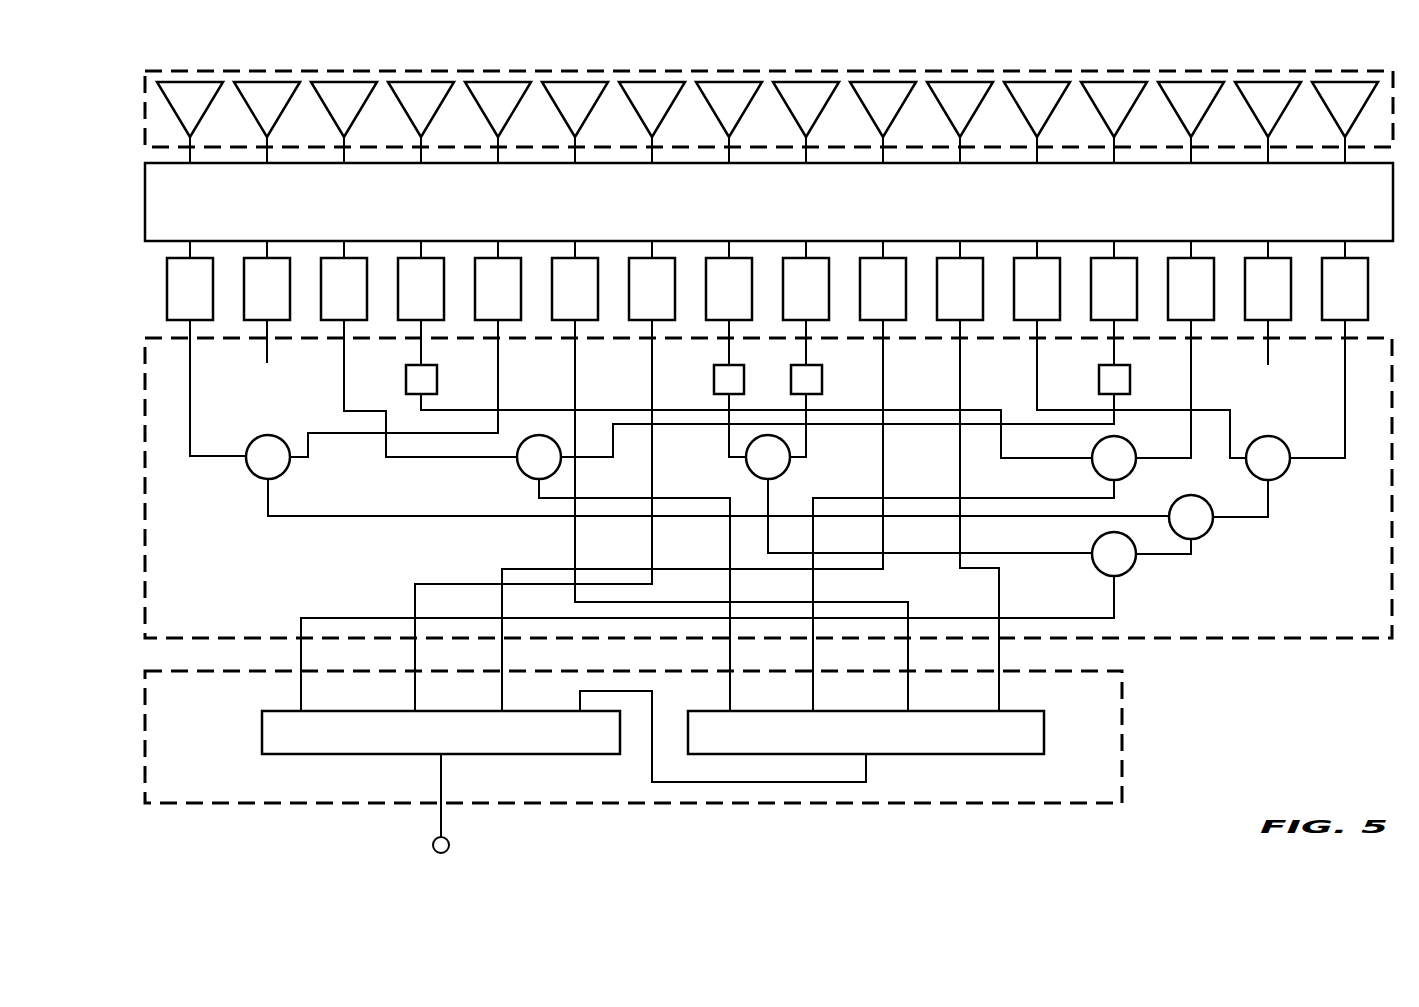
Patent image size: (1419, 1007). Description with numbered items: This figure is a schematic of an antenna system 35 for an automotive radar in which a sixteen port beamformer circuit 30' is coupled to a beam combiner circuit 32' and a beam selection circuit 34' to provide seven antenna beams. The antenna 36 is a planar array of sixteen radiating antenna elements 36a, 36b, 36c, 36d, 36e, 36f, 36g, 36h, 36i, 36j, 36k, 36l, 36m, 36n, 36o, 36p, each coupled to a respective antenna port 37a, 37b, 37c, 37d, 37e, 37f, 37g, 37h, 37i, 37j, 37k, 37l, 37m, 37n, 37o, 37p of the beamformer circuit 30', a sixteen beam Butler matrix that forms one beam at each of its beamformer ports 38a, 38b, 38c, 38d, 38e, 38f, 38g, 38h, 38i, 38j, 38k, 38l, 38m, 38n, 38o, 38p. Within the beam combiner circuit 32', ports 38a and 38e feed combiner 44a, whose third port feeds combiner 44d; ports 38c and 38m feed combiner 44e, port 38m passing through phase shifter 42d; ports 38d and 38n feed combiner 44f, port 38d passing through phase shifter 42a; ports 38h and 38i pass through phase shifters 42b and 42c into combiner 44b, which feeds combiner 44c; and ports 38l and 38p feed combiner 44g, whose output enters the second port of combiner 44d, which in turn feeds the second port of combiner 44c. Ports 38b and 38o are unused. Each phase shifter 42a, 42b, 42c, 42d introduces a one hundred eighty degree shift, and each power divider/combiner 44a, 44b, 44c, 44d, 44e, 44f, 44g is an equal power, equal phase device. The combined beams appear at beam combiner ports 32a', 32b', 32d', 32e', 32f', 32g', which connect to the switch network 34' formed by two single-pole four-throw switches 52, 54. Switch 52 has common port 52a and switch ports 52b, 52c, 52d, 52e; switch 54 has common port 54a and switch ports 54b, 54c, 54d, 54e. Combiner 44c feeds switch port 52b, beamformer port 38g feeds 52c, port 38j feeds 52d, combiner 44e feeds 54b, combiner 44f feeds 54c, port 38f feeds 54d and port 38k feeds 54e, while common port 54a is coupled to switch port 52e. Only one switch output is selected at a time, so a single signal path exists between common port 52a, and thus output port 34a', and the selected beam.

The antenna system 35 is at (1354, 70).
The antenna 36 is at (166, 122).
The antenna element 36a is at (174, 107).
The antenna element 36b is at (251, 107).
The antenna element 36c is at (328, 107).
The antenna element 36d is at (405, 107).
The antenna element 36e is at (482, 107).
The antenna element 36f is at (559, 107).
The antenna element 36g is at (636, 107).
The antenna element 36h is at (713, 107).
The antenna element 36i is at (790, 107).
The antenna element 36j is at (867, 107).
The antenna element 36k is at (944, 107).
The antenna element 36l is at (1021, 107).
The antenna element 36m is at (1098, 107).
The antenna element 36n is at (1175, 107).
The antenna element 36o is at (1252, 107).
The antenna element 36p is at (1329, 107).
The antenna port 37a is at (190, 166).
The antenna port 37b is at (267, 166).
The antenna port 37c is at (344, 166).
The antenna port 37d is at (421, 166).
The antenna port 37e is at (498, 166).
The antenna port 37f is at (575, 166).
The antenna port 37g is at (652, 166).
The antenna port 37h is at (729, 166).
The antenna port 37i is at (806, 166).
The antenna port 37j is at (883, 166).
The antenna port 37k is at (960, 166).
The antenna port 37l is at (1037, 166).
The antenna port 37m is at (1114, 166).
The antenna port 37n is at (1191, 166).
The antenna port 37o is at (1268, 166).
The antenna port 37p is at (1345, 166).
The beamformer circuit 30' is at (769, 202).
The beamformer circuit port 38a is at (174, 315).
The beamformer circuit port 38b is at (251, 315).
The beamformer circuit port 38c is at (328, 315).
The beamformer circuit port 38d is at (405, 315).
The beamformer circuit port 38e is at (482, 315).
The beamformer circuit port 38f is at (559, 315).
The beamformer circuit port 38g is at (636, 315).
The beamformer circuit port 38h is at (713, 315).
The beamformer circuit port 38i is at (790, 315).
The beamformer circuit port 38j is at (867, 315).
The beamformer circuit port 38k is at (944, 315).
The beamformer circuit port 38l is at (1021, 315).
The beamformer circuit port 38m is at (1098, 315).
The beamformer circuit port 38n is at (1175, 315).
The beamformer circuit port 38o is at (1252, 315).
The beamformer circuit port 38p is at (1329, 315).
The phase shifter 42a is at (406, 380).
The phase shifter 42b is at (714, 380).
The phase shifter 42c is at (822, 380).
The phase shifter 42d is at (1124, 365).
The power divider/combiner circuit 44a is at (253, 467).
The power divider/combiner circuit 44b is at (753, 467).
The power divider/combiner circuit 44c is at (1099, 564).
The power divider/combiner circuit 44d is at (1176, 527).
The power divider/combiner circuit 44e is at (524, 467).
The power divider/combiner circuit 44f is at (1099, 468).
The power divider/combiner circuit 44g is at (1253, 468).
The beam combiner circuit 32' is at (768, 511).
The beam combiner circuit port 32a' is at (284, 654).
The beam combiner circuit port 32b' is at (397, 654).
The beam combiner circuit port 32d' is at (712, 654).
The beam combiner circuit port 32e' is at (641, 654).
The beam combiner circuit port 32f' is at (891, 654).
The beam combiner circuit port 32g' is at (981, 654).
The beam selection circuit 34' is at (662, 737).
The switch circuit 52 is at (428, 744).
The common port 52a is at (441, 777).
The switch port 52b is at (301, 693).
The switch port 52c is at (415, 693).
The switch port 52d is at (502, 693).
The switch port 52e is at (580, 695).
The switch circuit 54 is at (853, 744).
The common port 54a is at (866, 778).
The switch port 54b is at (730, 693).
The switch port 54c is at (813, 693).
The switch port 54d is at (908, 693).
The switch port 54e is at (999, 693).
The port 34a' is at (421, 832).